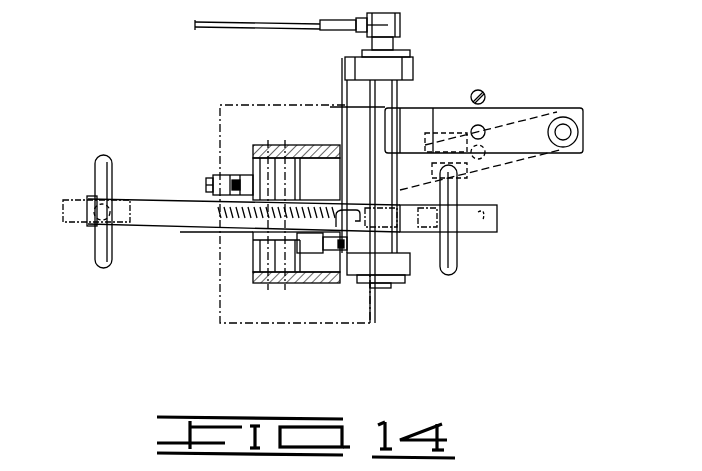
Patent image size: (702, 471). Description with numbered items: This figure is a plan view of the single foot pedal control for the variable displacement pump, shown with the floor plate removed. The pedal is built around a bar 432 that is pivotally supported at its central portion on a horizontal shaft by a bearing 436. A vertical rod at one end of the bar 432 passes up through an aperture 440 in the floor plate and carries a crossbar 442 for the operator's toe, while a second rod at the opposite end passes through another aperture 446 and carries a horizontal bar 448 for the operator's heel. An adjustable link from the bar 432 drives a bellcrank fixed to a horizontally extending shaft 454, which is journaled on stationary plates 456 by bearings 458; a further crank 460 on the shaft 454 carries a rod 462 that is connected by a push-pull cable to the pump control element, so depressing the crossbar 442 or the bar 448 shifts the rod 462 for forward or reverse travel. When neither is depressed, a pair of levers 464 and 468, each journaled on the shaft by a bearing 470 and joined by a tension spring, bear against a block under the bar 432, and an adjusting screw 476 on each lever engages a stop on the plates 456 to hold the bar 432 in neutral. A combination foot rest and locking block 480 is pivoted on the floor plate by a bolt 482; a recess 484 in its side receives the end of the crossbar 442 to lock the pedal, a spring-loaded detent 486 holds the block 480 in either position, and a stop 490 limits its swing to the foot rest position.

The bar 432 is at (177, 223).
The bearing 436 is at (257, 233).
The aperture 440 is at (497, 213).
The crossbar 442 is at (455, 264).
The aperture 446 is at (84, 215).
The horizontal bar 448 is at (98, 258).
The shaft 454 is at (377, 300).
The stationary plates 456 is at (325, 147).
The bearings 458 is at (398, 70).
The crank 460 is at (400, 33).
The rod 462 is at (330, 28).
The lever 464 is at (297, 272).
The lever 468 is at (228, 172).
The bearing 470 is at (257, 255).
The adjusting screw 476 is at (208, 184).
The combination foot rest and locking block 480 is at (448, 110).
The bolt 482 is at (572, 132).
The recess 484 is at (462, 178).
The spring-loaded detent 486 is at (483, 129).
The stop 490 is at (485, 94).